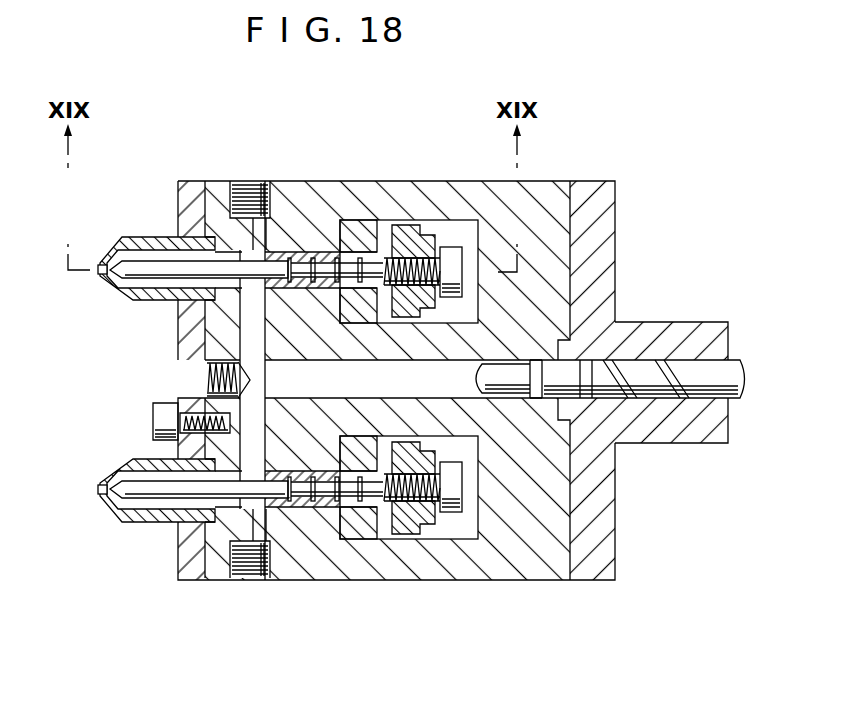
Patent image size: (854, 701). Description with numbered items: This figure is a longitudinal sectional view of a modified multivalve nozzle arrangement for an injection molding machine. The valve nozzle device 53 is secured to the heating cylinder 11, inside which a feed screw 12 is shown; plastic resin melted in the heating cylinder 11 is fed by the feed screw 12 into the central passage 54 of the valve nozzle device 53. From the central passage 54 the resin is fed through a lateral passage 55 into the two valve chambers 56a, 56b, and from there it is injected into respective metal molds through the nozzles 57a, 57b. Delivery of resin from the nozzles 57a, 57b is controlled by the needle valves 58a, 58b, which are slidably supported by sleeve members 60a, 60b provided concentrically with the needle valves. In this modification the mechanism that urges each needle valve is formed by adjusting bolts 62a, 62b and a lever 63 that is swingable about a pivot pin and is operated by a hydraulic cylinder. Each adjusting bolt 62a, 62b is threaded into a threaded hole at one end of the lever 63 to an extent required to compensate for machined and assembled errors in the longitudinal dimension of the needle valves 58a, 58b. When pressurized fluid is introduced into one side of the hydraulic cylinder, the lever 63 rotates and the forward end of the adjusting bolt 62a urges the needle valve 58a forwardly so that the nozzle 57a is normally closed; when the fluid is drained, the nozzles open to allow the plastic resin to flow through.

The heating cylinder 11 is at (665, 436).
The feed screw 12 is at (655, 368).
The valve nozzle device 53 is at (522, 586).
The central passage 54 is at (302, 383).
The lateral passage 55 is at (243, 343).
The valve chamber 56a is at (155, 255).
The valve chamber 56b is at (160, 502).
The nozzle 57a is at (100, 270).
The nozzle 57b is at (97, 489).
The needle valve 58a is at (137, 266).
The needle valve 58b is at (140, 483).
The sleeve member 60a is at (347, 223).
The sleeve member 60b is at (355, 528).
The adjusting bolt 62a is at (453, 257).
The adjusting bolt 62b is at (453, 512).
The lever 63 is at (405, 227).